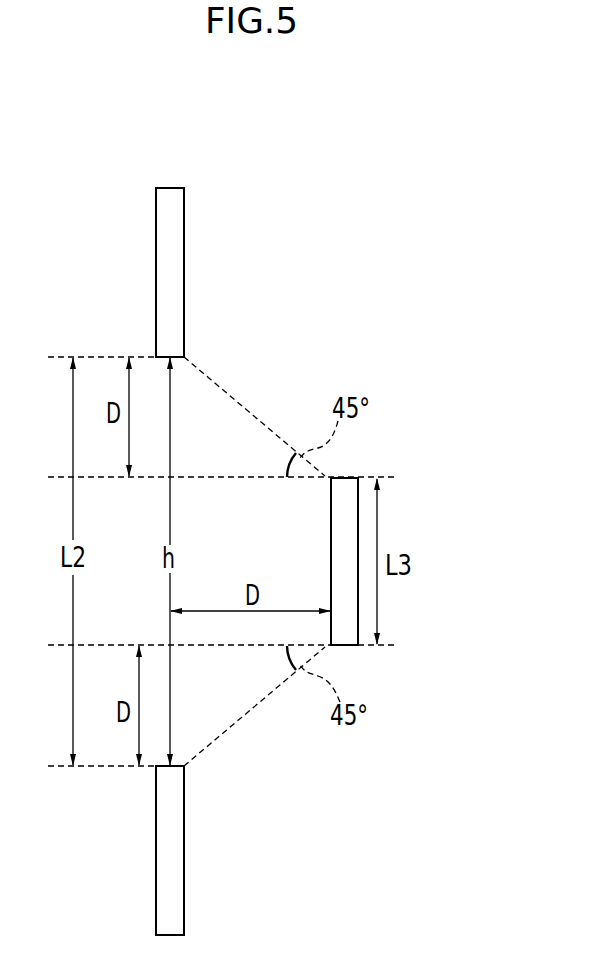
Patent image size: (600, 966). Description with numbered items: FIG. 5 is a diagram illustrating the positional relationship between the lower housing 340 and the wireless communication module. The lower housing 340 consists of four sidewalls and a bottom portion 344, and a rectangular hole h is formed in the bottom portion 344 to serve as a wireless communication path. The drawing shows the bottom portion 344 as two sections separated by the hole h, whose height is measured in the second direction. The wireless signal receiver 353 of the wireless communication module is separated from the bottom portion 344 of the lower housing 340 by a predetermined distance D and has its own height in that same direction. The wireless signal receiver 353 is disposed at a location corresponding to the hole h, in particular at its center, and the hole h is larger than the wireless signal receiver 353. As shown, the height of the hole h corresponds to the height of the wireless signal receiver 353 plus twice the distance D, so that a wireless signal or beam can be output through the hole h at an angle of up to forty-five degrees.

The lower housing 340 is at (226, 511).
The bottom portion 344 is at (170, 262).
The wireless signal receiver 353 is at (345, 478).